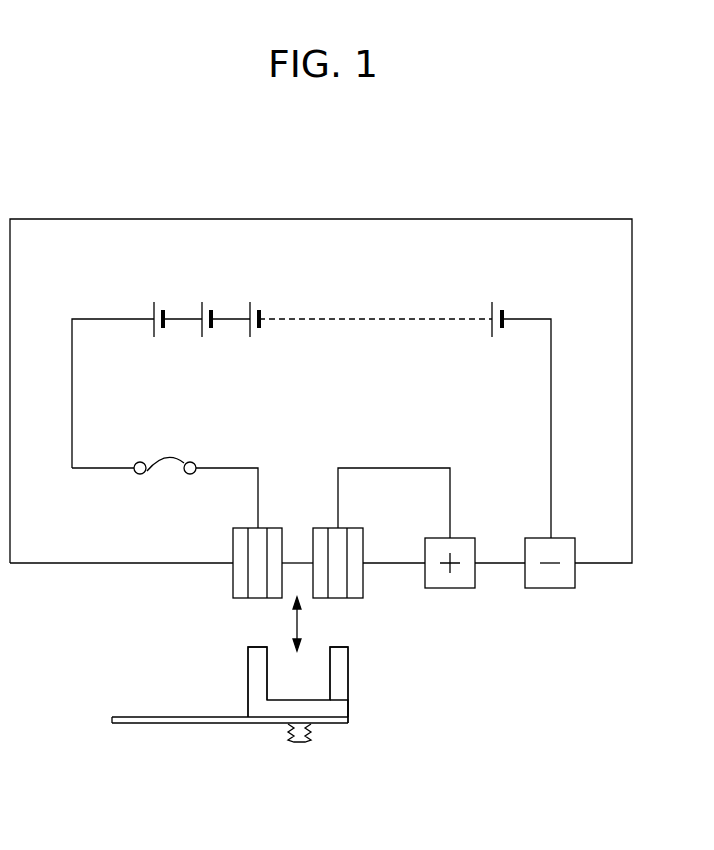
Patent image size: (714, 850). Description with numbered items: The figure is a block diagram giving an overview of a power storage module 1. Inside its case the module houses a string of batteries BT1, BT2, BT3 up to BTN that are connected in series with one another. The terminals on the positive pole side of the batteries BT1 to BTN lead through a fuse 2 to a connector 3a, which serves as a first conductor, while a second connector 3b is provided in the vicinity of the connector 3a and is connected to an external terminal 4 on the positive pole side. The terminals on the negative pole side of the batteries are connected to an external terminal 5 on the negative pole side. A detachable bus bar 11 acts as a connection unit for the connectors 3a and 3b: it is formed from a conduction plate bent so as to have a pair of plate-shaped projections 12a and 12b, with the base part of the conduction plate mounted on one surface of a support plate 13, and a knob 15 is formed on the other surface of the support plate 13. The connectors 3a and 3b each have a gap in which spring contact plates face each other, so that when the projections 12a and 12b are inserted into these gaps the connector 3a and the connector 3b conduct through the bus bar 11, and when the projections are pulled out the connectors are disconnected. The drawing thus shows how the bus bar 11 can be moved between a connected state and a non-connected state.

The power storage module 1 is at (373, 219).
The battery BT1 is at (163, 306).
The battery BT2 is at (210, 306).
The battery BT3 is at (258, 306).
The battery BTN is at (502, 306).
The fuse 2 is at (155, 474).
The connector 3a is at (232, 580).
The connector 3b is at (364, 580).
The external terminal 4 is at (458, 590).
The external terminal 5 is at (556, 590).
The bus bar 11 is at (257, 727).
The plate-shaped projection 12a is at (247, 693).
The plate-shaped projection 12b is at (349, 693).
The support plate 13 is at (340, 727).
The knob 15 is at (298, 745).